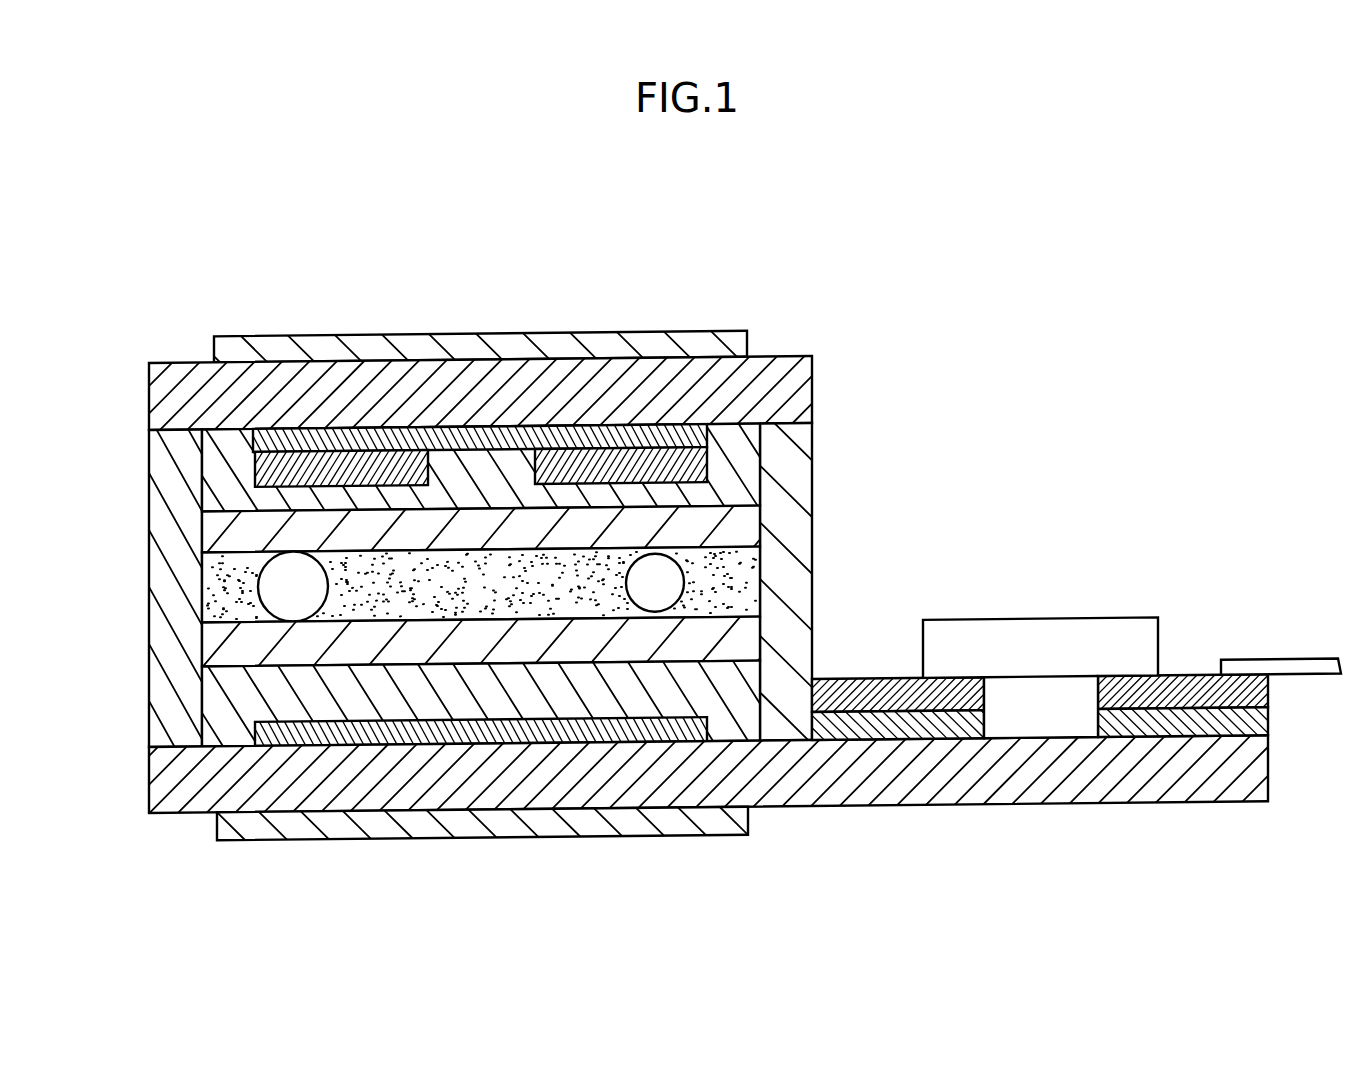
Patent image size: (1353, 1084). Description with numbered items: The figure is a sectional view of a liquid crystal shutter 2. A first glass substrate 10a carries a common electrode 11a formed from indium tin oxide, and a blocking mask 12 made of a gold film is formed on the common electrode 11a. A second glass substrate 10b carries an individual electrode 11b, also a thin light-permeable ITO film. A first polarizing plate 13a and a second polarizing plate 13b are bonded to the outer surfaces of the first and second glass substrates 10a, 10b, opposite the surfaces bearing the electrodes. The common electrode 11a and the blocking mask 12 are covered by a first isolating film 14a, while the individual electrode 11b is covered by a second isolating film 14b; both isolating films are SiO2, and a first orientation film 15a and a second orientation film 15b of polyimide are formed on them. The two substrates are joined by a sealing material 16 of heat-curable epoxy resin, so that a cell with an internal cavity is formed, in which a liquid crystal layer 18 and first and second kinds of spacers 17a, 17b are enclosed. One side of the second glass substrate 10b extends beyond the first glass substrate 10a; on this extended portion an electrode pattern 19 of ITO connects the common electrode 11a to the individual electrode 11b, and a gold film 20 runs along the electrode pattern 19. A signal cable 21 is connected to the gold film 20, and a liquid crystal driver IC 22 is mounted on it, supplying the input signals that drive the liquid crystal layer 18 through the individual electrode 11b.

The liquid crystal shutter 2 is at (852, 332).
The first glass substrate 10a is at (480, 375).
The second glass substrate 10b is at (355, 799).
The common electrode 11a is at (397, 453).
The individual electrode 11b is at (472, 738).
The blocking mask 12 is at (303, 464).
The first polarizing plate 13a is at (712, 346).
The second polarizing plate 13b is at (625, 835).
The first isolating film 14a is at (220, 492).
The second isolating film 14b is at (220, 725).
The first orientation film 15a is at (223, 530).
The second orientation film 15b is at (243, 654).
The sealing material 16 is at (172, 463).
The first kind of spacer 17a is at (285, 589).
The second kind of spacer 17b is at (660, 595).
The liquid crystal layer 18 is at (725, 566).
The electrode pattern 19 is at (1143, 732).
The gold film 20 is at (1230, 706).
The signal cable 21 is at (1280, 674).
The liquid crystal driver IC 22 is at (1130, 638).